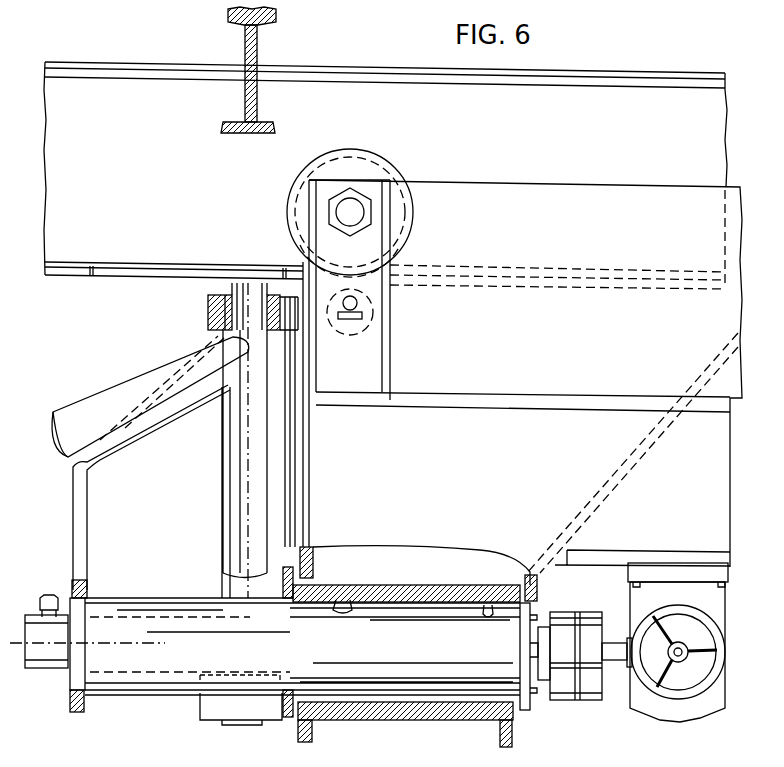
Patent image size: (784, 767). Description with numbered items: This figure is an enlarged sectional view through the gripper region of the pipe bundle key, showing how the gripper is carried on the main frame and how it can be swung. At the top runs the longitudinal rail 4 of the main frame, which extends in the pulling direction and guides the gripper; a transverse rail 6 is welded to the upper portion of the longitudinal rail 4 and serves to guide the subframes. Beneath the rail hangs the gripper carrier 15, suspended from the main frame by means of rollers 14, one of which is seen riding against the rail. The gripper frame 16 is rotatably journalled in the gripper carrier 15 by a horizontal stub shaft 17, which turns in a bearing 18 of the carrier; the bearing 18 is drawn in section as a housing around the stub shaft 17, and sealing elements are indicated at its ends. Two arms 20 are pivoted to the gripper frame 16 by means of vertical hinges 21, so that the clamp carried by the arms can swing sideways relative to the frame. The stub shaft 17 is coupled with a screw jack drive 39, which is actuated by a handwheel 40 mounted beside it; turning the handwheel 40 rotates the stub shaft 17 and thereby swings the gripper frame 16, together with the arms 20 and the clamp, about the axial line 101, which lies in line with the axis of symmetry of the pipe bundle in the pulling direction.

The longitudinal rail 4 is at (158, 100).
The transverse rail 6 is at (258, 40).
The rollers 14 is at (370, 297).
The gripper carrier 15 is at (616, 190).
The gripper frame 16 is at (208, 316).
The horizontal stub shaft 17 is at (425, 648).
The bearing 18 is at (352, 602).
The arms 20 is at (118, 395).
The vertical hinges 21 is at (248, 479).
The screw jack drive 39 is at (656, 703).
The handwheel 40 is at (684, 606).
The axial line 101 is at (18, 645).